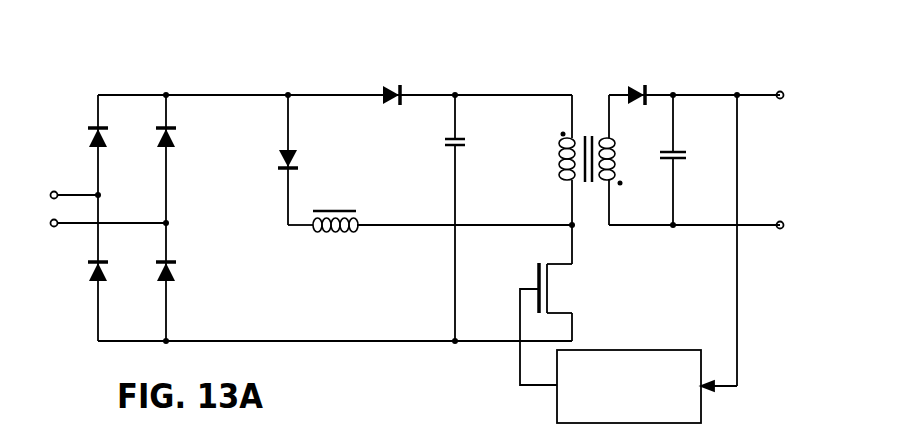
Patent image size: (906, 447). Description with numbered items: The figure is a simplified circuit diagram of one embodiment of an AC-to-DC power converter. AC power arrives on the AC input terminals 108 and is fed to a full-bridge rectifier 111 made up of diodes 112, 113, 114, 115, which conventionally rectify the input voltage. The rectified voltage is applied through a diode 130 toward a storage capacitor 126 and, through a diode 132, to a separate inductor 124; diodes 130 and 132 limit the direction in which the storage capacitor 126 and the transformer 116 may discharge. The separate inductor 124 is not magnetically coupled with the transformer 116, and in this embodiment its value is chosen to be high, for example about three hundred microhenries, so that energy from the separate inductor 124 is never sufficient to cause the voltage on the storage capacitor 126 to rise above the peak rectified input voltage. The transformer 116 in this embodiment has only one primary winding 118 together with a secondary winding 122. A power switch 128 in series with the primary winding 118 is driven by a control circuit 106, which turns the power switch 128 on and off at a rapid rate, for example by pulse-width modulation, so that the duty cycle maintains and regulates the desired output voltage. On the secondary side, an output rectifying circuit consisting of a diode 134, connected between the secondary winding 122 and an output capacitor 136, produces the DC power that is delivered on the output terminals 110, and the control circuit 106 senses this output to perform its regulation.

The control circuit 106 is at (667, 348).
The AC input terminals 108 is at (53, 190).
The output terminals 110 is at (782, 91).
The full-bridge rectifier 111 is at (130, 80).
The diode 112 is at (105, 142).
The diode 113 is at (173, 142).
The diode 114 is at (173, 277).
The diode 115 is at (107, 277).
The transformer 116 is at (581, 104).
The primary winding 118 is at (560, 153).
The secondary winding 122 is at (615, 149).
The separate inductor 124 is at (340, 232).
The storage capacitor 126 is at (447, 148).
The power switch 128 is at (537, 281).
The diode 130 is at (391, 87).
The diode 132 is at (285, 169).
The diode 134 is at (640, 86).
The output capacitor 136 is at (684, 150).